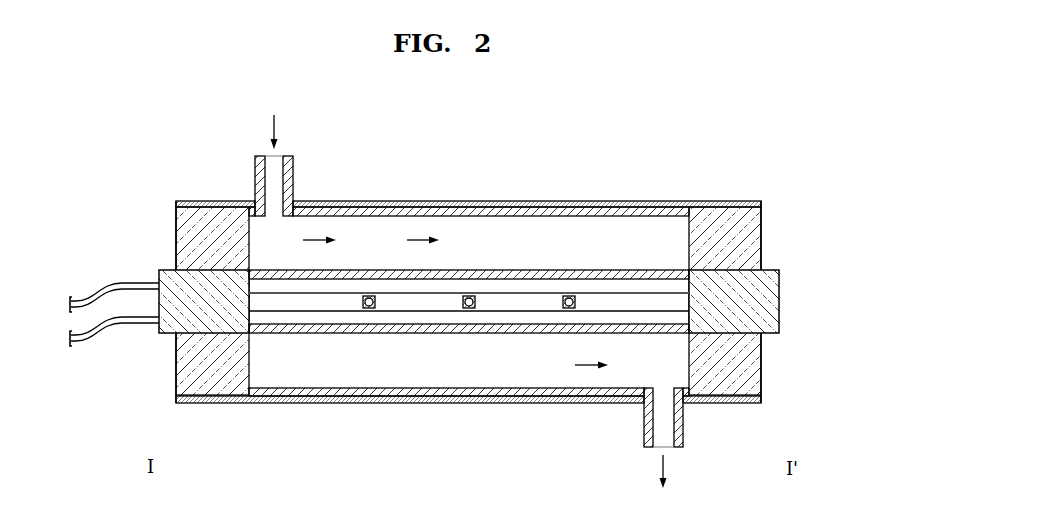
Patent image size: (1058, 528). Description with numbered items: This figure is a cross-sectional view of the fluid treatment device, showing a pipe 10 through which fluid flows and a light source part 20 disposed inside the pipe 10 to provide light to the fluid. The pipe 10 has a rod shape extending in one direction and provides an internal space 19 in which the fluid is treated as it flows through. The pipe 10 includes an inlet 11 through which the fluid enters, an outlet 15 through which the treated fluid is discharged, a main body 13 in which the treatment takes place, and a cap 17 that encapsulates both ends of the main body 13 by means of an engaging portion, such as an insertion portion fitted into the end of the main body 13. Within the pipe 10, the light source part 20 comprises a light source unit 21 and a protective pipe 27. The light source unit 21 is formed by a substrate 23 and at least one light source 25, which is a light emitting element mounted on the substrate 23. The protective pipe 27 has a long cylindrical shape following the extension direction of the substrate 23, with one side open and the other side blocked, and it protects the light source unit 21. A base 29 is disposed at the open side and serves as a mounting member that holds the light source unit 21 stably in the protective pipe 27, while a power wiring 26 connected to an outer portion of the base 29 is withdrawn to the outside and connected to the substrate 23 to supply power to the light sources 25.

The pipe 10 is at (566, 198).
The inlet 11 is at (288, 155).
The main body 13 is at (633, 210).
The outlet 15 is at (678, 450).
The cap 17 is at (725, 222).
The internal space 19 is at (461, 228).
The light source part 20 is at (493, 262).
The light source unit 21 is at (469, 397).
The substrate 23 is at (331, 302).
The light source 25 is at (368, 310).
The power wiring 26 is at (120, 282).
The protective pipe 27 is at (288, 335).
The base 29 is at (766, 270).